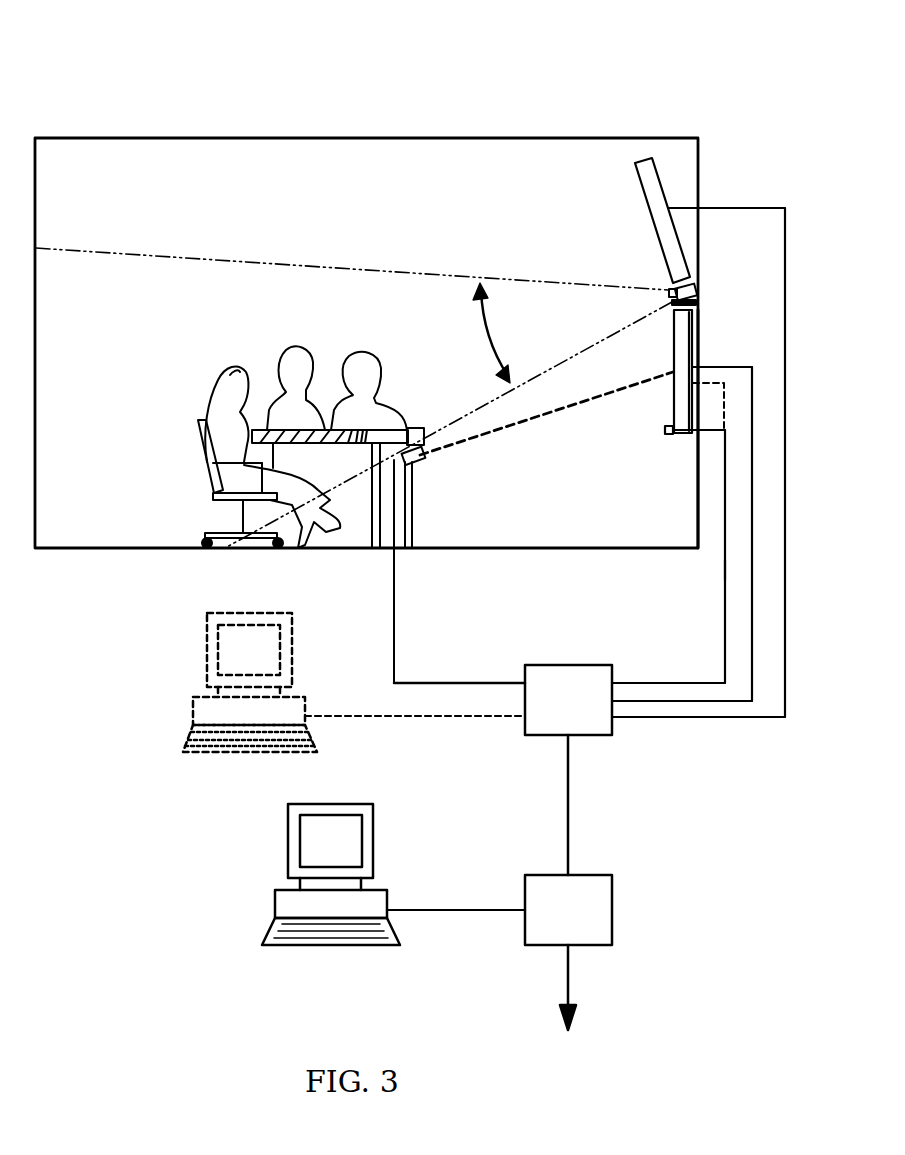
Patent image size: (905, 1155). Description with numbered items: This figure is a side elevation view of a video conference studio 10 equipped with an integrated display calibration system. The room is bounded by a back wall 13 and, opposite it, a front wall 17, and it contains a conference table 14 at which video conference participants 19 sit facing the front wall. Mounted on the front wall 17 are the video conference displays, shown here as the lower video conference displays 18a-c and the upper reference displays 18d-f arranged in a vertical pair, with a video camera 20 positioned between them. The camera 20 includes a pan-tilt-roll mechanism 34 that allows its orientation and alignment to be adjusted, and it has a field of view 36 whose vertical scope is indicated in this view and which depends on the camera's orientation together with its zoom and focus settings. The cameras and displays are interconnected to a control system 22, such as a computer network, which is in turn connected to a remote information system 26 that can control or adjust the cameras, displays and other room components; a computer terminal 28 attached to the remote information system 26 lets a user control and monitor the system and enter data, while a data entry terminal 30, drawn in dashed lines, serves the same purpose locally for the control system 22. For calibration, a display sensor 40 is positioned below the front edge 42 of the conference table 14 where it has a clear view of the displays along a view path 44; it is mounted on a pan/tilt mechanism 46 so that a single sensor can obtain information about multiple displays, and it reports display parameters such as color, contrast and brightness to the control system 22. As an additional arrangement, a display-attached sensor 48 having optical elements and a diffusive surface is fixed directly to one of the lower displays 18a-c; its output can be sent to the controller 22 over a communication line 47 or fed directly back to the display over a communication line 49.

The video conference studio 10 is at (165, 55).
The back wall 13 is at (37, 397).
The conference table 14 is at (335, 400).
The front wall 17 is at (697, 523).
The lower video conference displays 18a-c is at (684, 347).
The upper reference displays 18d-f is at (659, 213).
The video conference participants 19 is at (285, 355).
The video camera 20 is at (670, 293).
The control system 22 is at (503, 770).
The remote information system 26 is at (568, 952).
The computer terminal 28 is at (300, 847).
The data entry terminal 30 is at (205, 712).
The pan-tilt-roll mechanism 34 is at (672, 306).
The field of view 36 is at (484, 337).
The display sensor 40 is at (413, 462).
The front edge 42 is at (425, 446).
The view path 44 is at (523, 418).
The pan/tilt mechanism 46 is at (410, 427).
The communication line 47 is at (724, 570).
The display-attached sensor 48 is at (665, 430).
The communication line 49 is at (724, 403).